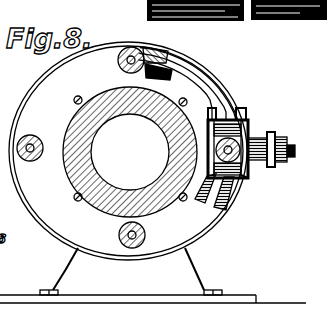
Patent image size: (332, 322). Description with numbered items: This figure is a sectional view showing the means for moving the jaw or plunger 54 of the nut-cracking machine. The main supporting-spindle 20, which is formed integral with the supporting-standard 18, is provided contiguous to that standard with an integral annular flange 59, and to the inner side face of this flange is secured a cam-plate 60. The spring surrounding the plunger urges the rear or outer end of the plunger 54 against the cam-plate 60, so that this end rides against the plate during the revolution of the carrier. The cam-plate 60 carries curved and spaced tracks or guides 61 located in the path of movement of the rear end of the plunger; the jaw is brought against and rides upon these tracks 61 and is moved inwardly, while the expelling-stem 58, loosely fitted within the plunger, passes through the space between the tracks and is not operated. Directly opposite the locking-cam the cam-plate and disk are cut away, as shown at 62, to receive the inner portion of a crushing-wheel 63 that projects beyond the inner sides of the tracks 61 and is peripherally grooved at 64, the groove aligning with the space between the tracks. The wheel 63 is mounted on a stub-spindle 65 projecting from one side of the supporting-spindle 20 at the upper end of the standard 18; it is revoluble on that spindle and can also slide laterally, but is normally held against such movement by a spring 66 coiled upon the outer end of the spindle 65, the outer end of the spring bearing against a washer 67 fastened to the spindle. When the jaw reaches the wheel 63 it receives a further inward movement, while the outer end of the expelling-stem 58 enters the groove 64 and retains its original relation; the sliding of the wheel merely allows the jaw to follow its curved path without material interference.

The supporting-standard 18 is at (153, 275).
The supporting-spindle 20 is at (139, 116).
The jaw or plunger 54 is at (121, 68).
The expelling-stem 58 is at (133, 50).
The annular flange 59 is at (220, 78).
The cam-plate 60 is at (128, 151).
The tracks or guides 61 is at (172, 82).
The cut-away portion 62 is at (197, 197).
The crushing-wheel 63 is at (240, 128).
The peripheral groove 64 is at (243, 186).
The stub-spindle 65 is at (291, 152).
The spring 66 is at (247, 173).
The washer 67 is at (271, 167).